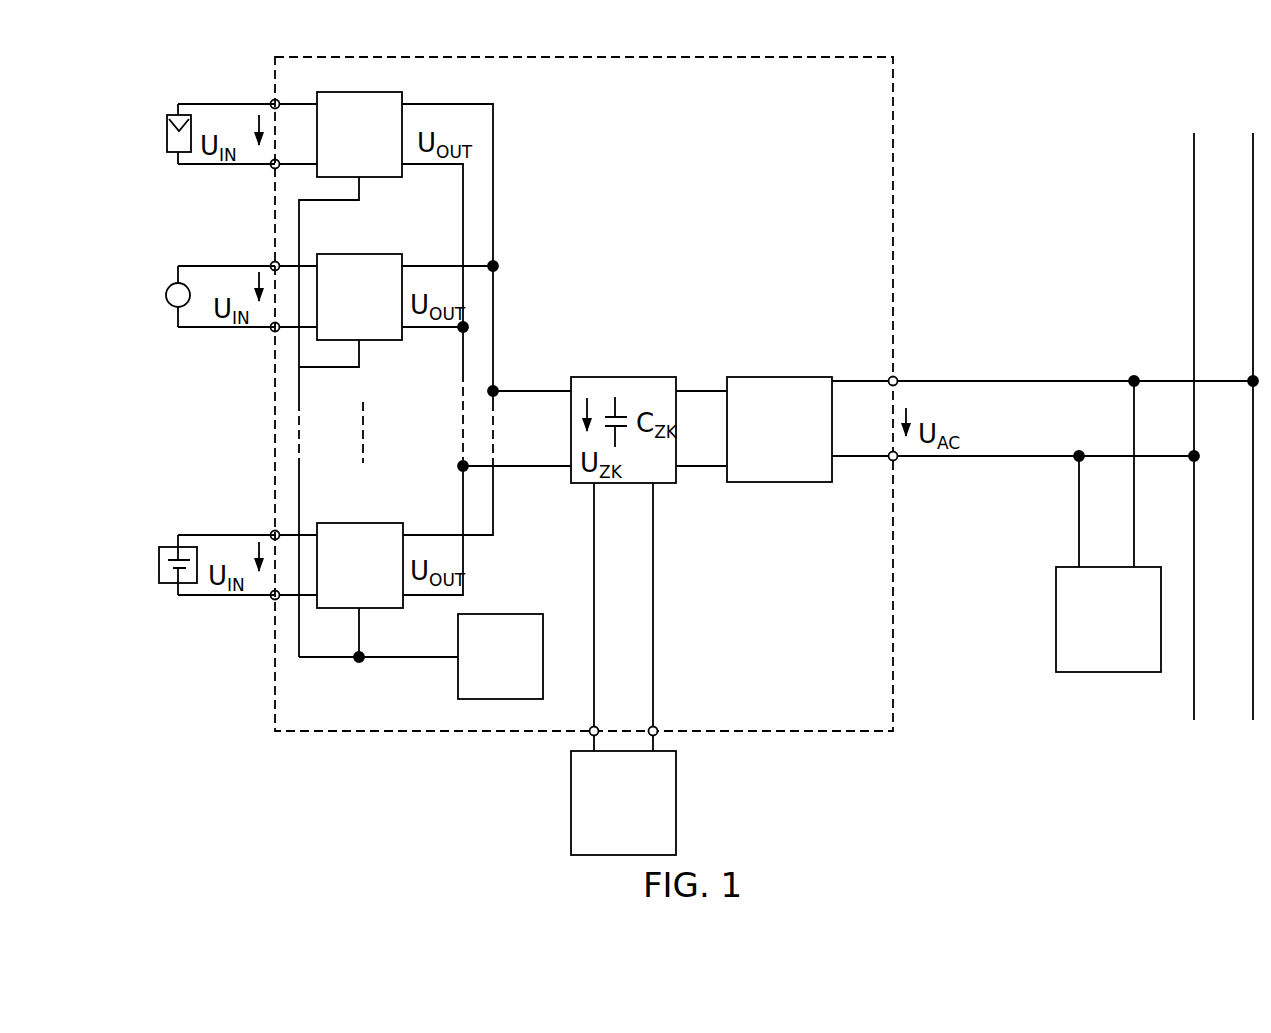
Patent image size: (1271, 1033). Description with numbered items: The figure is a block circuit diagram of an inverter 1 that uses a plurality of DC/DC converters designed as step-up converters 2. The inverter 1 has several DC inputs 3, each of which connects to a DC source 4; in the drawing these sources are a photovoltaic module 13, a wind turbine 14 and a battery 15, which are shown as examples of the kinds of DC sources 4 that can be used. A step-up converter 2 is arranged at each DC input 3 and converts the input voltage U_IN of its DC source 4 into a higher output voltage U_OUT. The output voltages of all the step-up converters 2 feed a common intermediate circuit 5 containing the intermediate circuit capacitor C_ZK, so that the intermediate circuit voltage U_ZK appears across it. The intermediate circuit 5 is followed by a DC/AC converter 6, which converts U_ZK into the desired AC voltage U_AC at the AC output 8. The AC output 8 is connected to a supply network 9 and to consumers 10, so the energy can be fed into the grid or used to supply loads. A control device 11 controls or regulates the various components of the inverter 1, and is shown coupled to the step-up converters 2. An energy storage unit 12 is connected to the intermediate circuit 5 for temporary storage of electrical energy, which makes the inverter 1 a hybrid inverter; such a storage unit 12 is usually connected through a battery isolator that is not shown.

The inverter 1 is at (880, 39).
The step-up converter 2 is at (360, 92).
The DC input 3 is at (262, 87).
The DC source 4 is at (187, 97).
The intermediate circuit 5 is at (622, 377).
The DC/AC converter 6 is at (780, 377).
The AC output 8 is at (905, 370).
The supply network 9 is at (1220, 140).
The consumers 10 is at (1056, 620).
The control device 11 is at (500, 614).
The energy storage unit 12 is at (571, 803).
The photovoltaic module 13 is at (163, 138).
The wind turbine 14 is at (163, 318).
The battery 15 is at (155, 572).